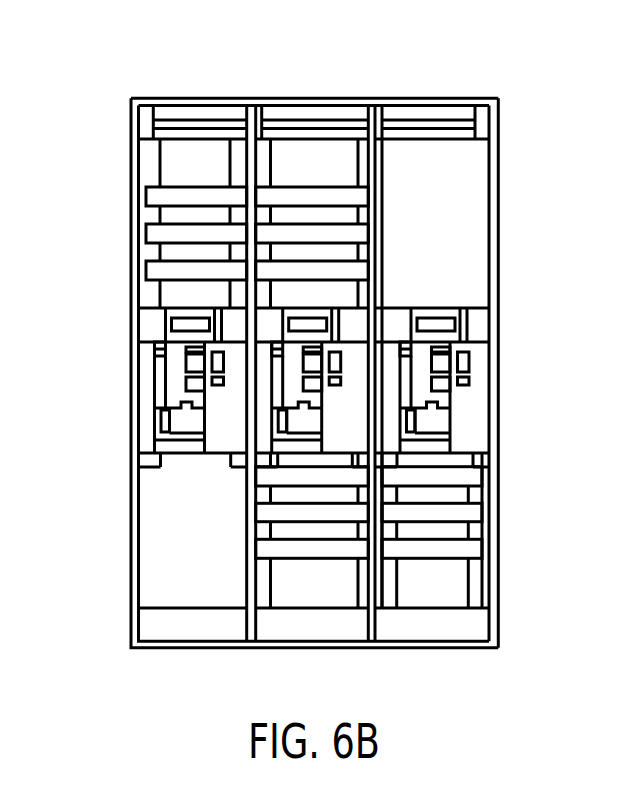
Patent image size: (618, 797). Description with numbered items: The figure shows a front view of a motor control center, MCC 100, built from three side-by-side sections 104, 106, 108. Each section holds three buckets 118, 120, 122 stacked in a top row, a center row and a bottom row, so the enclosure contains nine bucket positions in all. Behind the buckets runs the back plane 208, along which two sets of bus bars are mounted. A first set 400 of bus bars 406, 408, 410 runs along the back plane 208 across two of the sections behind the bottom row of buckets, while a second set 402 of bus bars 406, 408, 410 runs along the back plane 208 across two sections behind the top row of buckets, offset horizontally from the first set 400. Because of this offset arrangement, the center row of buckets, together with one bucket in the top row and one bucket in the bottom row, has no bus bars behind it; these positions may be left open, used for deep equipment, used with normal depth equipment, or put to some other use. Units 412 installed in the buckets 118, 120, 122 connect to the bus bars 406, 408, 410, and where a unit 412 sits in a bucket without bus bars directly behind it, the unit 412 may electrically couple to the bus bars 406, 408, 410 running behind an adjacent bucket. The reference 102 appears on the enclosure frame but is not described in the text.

The MCC 100 is at (128, 111).
The top frame rail 102 is at (197, 98).
The section 104 is at (213, 117).
The section 106 is at (322, 117).
The section 108 is at (428, 117).
The bucket 118 is at (500, 193).
The bucket 120 is at (490, 380).
The bucket 122 is at (150, 496).
The back plane 208 is at (213, 635).
The first set of bus bars 400 is at (513, 460).
The second set of bus bars 402 is at (118, 176).
The bus bar 406 is at (180, 272).
The bus bar 408 is at (177, 232).
The bus bar 410 is at (186, 197).
The unit 412 is at (178, 369).